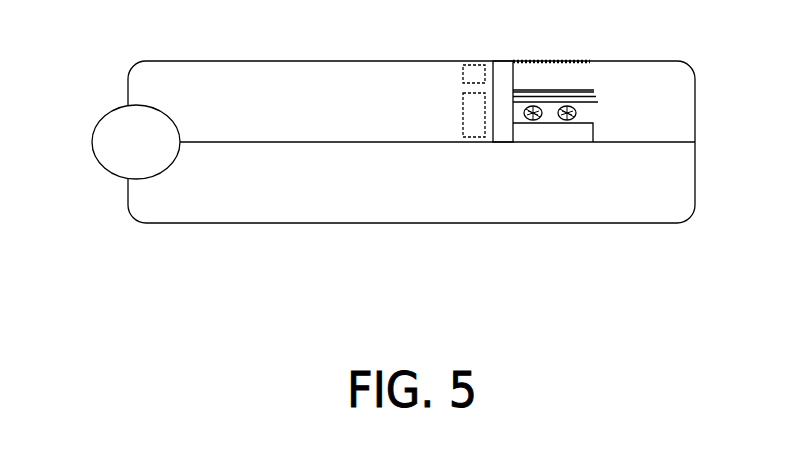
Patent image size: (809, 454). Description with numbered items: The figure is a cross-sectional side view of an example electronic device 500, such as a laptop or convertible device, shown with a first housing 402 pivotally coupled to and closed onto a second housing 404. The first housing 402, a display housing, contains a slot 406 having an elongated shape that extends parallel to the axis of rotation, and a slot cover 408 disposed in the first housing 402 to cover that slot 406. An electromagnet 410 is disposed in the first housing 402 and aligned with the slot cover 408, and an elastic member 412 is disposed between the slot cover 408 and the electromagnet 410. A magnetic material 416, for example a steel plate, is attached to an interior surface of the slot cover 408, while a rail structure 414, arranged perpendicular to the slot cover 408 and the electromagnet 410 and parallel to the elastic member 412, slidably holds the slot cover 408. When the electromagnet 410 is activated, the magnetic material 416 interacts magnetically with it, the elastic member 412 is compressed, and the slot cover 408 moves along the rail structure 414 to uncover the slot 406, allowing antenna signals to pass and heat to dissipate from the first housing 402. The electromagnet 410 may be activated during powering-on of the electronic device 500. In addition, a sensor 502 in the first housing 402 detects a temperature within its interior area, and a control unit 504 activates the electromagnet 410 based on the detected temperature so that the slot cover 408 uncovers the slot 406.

The first housing 402 is at (128, 76).
The second housing 404 is at (128, 196).
The slot 406 is at (550, 60).
The slot cover 408 is at (598, 98).
The electromagnet 410 is at (593, 130).
The elastic member 412 is at (533, 125).
The rail structure 414 is at (497, 61).
The magnetic material 416 is at (597, 98).
The electronic device 500 is at (534, 310).
The sensor 502 is at (473, 68).
The control unit 504 is at (474, 147).